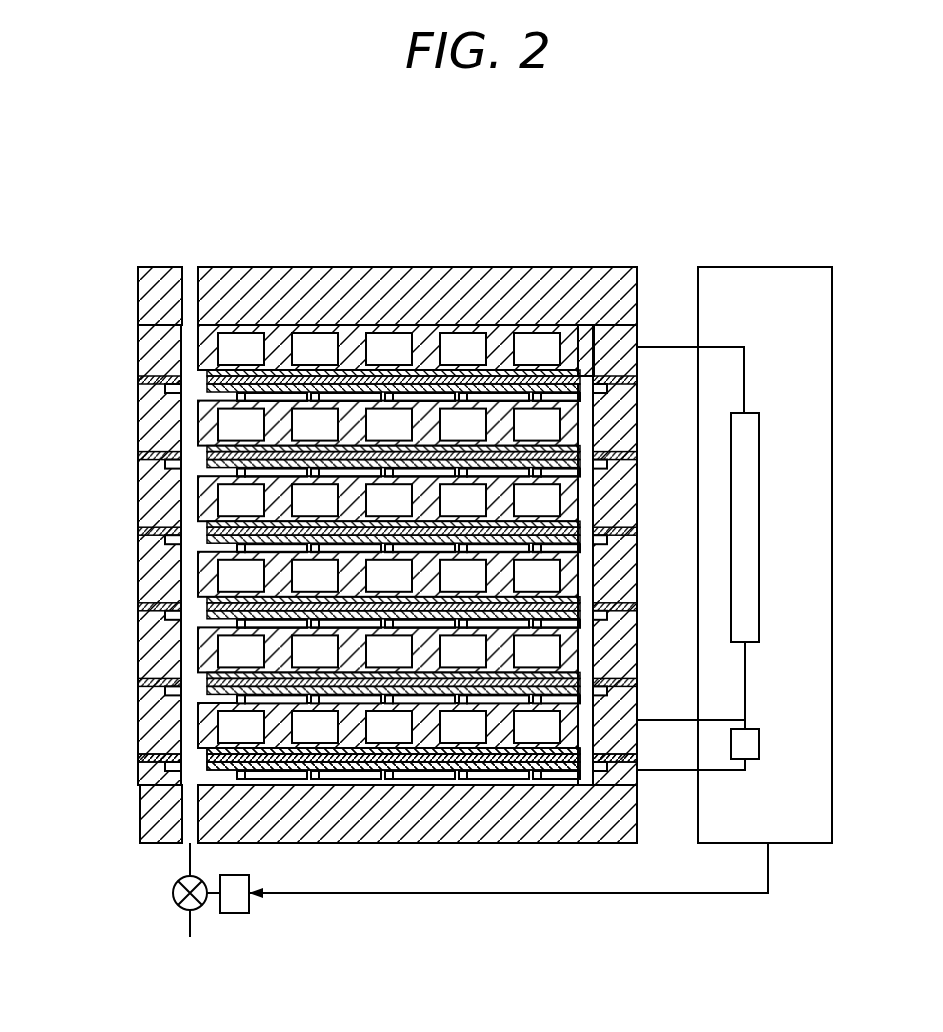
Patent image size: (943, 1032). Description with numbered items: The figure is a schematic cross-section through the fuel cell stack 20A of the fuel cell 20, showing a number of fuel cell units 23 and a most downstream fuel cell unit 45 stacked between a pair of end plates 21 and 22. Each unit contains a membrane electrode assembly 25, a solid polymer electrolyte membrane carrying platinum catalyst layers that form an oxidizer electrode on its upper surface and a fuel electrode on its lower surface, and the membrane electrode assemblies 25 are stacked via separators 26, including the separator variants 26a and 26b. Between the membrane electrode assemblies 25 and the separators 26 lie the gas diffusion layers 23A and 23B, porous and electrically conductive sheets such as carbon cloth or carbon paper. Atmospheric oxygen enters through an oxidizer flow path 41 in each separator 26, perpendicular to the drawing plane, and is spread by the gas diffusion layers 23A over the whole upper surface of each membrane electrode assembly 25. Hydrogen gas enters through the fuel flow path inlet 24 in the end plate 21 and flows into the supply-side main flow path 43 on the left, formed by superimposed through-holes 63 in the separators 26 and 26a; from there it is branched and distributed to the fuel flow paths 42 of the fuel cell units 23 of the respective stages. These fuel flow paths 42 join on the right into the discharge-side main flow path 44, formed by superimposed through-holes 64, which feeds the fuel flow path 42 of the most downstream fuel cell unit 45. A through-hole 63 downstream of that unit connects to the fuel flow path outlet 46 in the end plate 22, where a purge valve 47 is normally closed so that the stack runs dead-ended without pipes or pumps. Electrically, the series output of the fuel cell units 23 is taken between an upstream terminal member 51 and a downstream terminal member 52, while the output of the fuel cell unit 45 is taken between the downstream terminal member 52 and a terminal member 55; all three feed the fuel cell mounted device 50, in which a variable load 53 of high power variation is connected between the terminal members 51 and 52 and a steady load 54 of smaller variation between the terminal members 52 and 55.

The fuel cell 20 is at (553, 197).
The fuel cell stack 20A is at (135, 577).
The end plate 21 is at (632, 287).
The end plate 22 is at (633, 830).
The fuel cell unit 23 is at (356, 555).
The gas diffusion layer 23A is at (210, 387).
The gas diffusion layer 23B is at (210, 373).
The fuel flow path inlet 24 is at (191, 300).
The membrane electrode assembly 25 is at (140, 378).
The separator 26 is at (615, 418).
The separator 26a is at (590, 355).
The separator 26b is at (635, 777).
The oxidizer flow path 41 is at (230, 350).
The fuel flow path 42 is at (210, 397).
The supply-side main flow path 43 is at (188, 473).
The discharge-side main flow path 44 is at (590, 558).
The fuel cell unit 45 is at (70, 825).
The fuel flow path outlet 46 is at (185, 845).
The purge valve 47 is at (236, 913).
The fuel cell mounted device 50 is at (795, 267).
The upstream terminal member 51 is at (662, 347).
The downstream terminal member 52 is at (665, 720).
The variable load 53 is at (760, 420).
The steady load 54 is at (760, 742).
The terminal member 55 is at (665, 770).
The through-hole 63 is at (190, 635).
The through-hole 64 is at (590, 655).